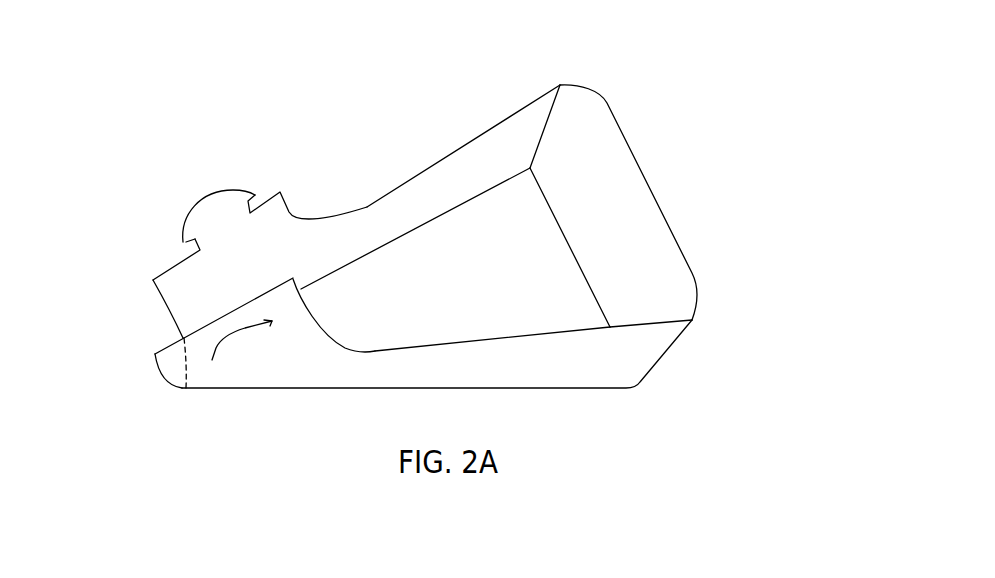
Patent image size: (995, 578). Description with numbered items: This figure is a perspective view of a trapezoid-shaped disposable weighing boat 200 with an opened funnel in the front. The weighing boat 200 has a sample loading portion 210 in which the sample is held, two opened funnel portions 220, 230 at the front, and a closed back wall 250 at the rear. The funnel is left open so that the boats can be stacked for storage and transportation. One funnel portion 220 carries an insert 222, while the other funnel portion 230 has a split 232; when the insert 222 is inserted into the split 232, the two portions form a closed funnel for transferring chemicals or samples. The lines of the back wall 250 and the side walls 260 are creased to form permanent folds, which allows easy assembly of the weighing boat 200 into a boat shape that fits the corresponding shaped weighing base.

The trapezoid-shaped disposable weighing boat 200 is at (446, 103).
The sample loading portion 210 is at (513, 243).
The opened funnel portion 220 is at (288, 217).
The insert 222 is at (183, 217).
The opened funnel portion 230 is at (173, 357).
The split 232 is at (250, 338).
The closed back wall 250 is at (652, 260).
The side walls 260 is at (623, 358).